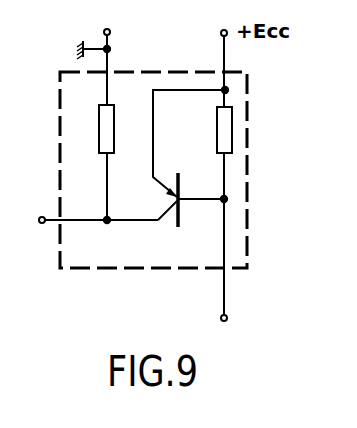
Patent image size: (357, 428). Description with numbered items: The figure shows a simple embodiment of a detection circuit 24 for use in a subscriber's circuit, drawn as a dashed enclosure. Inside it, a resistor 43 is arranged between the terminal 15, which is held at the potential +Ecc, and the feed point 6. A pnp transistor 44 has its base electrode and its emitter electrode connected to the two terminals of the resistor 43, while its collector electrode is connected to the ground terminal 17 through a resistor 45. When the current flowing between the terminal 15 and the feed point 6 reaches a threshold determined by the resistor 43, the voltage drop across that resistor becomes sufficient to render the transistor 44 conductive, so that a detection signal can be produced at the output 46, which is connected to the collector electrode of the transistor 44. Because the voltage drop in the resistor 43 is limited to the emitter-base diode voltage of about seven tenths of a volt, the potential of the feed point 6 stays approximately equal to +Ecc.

The terminal 17 is at (96, 29).
The terminal 15 is at (222, 53).
The resistor 45 is at (100, 122).
The resistor 43 is at (218, 131).
The pnp transistor 44 is at (176, 203).
The output 46 is at (91, 235).
The detection circuit 24 is at (248, 177).
The feed point 6 is at (232, 260).